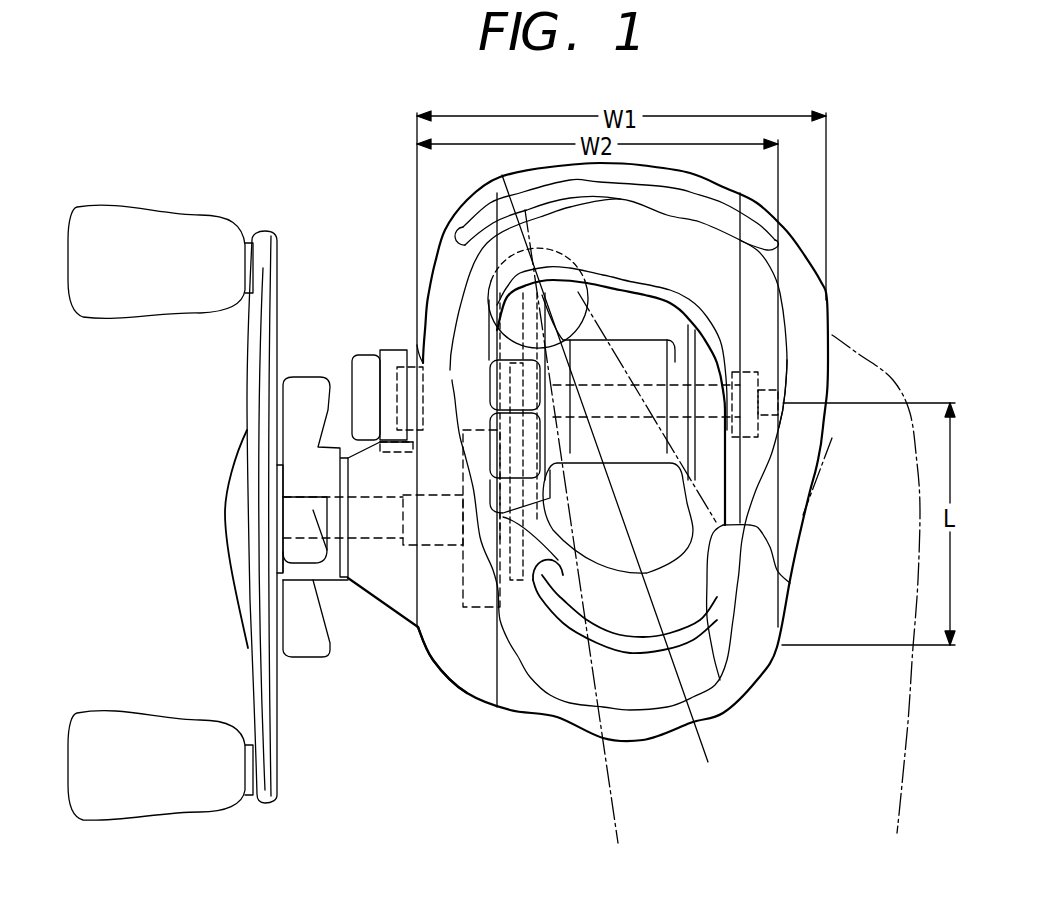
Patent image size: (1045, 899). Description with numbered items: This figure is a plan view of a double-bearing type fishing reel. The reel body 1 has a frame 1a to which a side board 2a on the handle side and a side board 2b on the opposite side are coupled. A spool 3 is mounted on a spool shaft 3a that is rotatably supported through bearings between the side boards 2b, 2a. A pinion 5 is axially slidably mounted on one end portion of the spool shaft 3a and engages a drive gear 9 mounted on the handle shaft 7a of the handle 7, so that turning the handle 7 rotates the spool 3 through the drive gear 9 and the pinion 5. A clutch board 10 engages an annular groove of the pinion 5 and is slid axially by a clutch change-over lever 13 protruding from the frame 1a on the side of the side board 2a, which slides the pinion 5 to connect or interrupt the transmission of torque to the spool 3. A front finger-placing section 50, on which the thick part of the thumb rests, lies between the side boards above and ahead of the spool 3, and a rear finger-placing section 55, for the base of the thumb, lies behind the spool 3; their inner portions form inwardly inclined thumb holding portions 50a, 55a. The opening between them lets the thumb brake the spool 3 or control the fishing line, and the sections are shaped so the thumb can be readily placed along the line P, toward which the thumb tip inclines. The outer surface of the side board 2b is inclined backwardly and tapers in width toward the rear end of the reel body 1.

The reel body 1 is at (874, 242).
The frame 1a is at (510, 697).
The side board 2a is at (440, 277).
The side board 2b is at (803, 437).
The spool 3 is at (668, 312).
The spool shaft 3a is at (768, 390).
The pinion 5 is at (470, 365).
The handle 7 is at (138, 740).
The handle shaft 7a is at (313, 510).
The drive gear 9 is at (480, 613).
The clutch board 10 is at (477, 340).
The clutch change-over lever 13 is at (485, 407).
The front finger-placing section 50 is at (757, 317).
The thumb holding portion 50a is at (628, 290).
The rear finger-placing section 55 is at (660, 690).
The thumb holding portion 55a is at (710, 625).
The line P is at (611, 480).